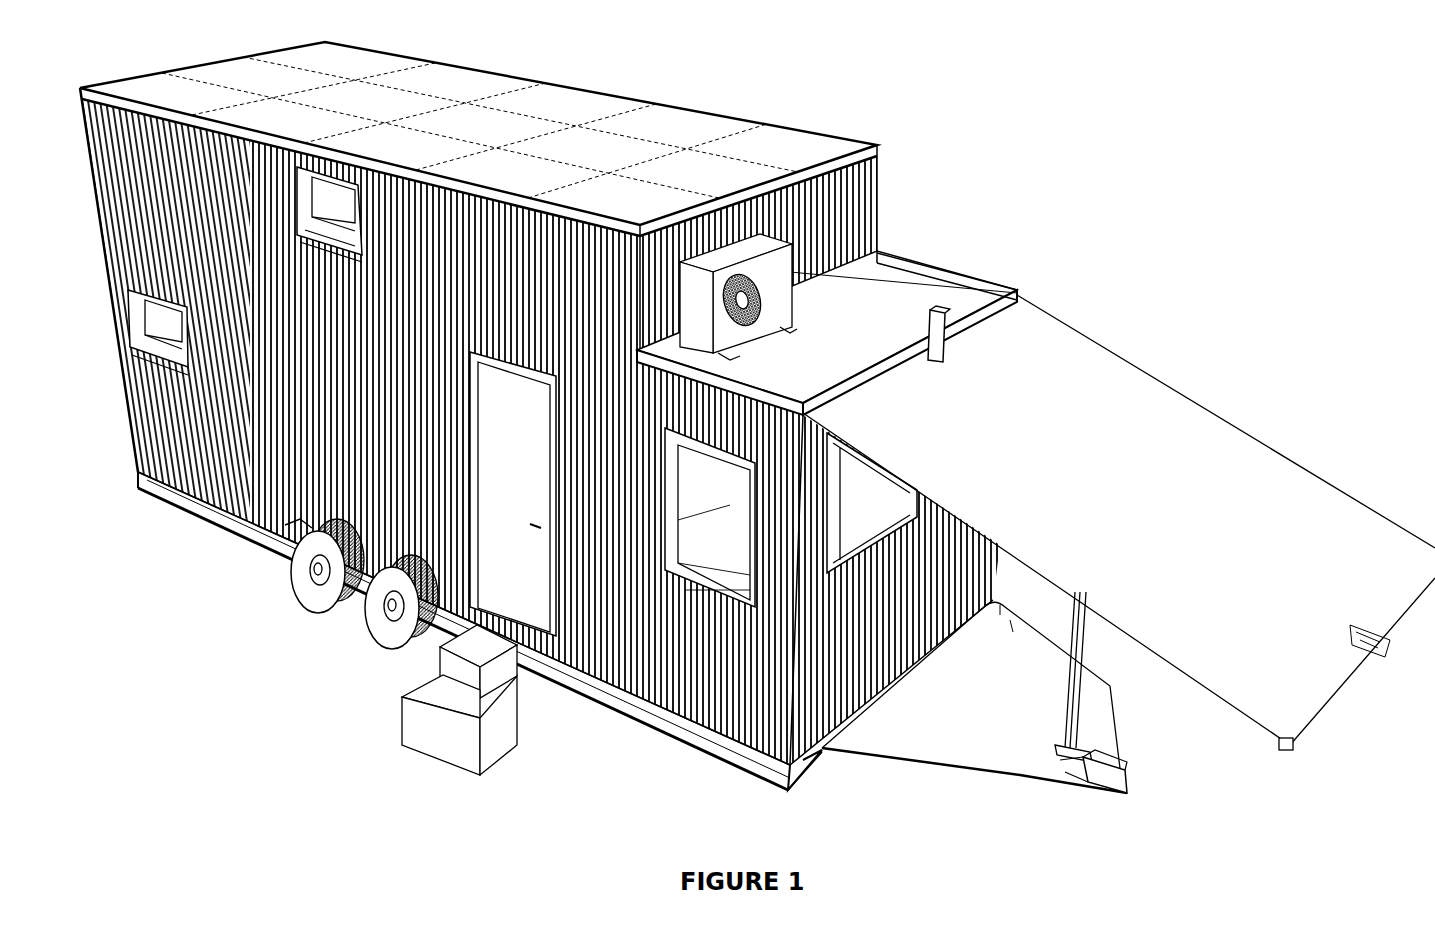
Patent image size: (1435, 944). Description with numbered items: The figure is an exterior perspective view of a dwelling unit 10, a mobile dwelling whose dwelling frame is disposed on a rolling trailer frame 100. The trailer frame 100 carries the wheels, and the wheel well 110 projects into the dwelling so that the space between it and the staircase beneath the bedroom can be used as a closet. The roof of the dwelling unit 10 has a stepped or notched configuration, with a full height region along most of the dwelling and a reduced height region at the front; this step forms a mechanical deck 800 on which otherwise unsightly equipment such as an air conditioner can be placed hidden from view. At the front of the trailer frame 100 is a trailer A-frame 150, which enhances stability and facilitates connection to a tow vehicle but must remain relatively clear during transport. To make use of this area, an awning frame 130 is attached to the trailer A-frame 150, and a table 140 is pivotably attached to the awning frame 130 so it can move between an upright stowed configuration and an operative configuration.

The dwelling unit 10 is at (985, 114).
The trailer frame 100 is at (247, 515).
The wheel well 110 is at (293, 523).
The awning frame 130 is at (950, 313).
The table 140 is at (1001, 726).
The trailer A-frame 150 is at (1077, 780).
The mechanical deck 800 is at (823, 366).